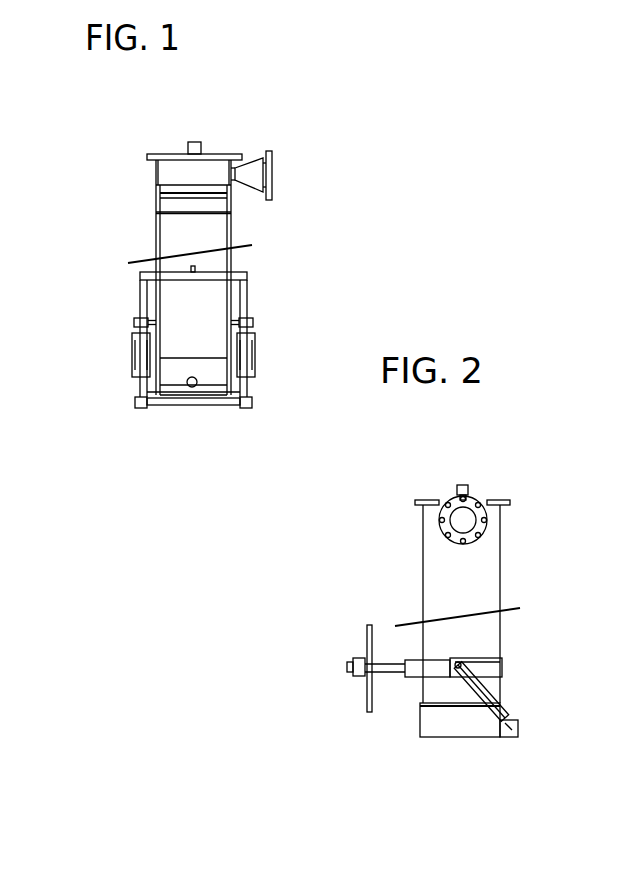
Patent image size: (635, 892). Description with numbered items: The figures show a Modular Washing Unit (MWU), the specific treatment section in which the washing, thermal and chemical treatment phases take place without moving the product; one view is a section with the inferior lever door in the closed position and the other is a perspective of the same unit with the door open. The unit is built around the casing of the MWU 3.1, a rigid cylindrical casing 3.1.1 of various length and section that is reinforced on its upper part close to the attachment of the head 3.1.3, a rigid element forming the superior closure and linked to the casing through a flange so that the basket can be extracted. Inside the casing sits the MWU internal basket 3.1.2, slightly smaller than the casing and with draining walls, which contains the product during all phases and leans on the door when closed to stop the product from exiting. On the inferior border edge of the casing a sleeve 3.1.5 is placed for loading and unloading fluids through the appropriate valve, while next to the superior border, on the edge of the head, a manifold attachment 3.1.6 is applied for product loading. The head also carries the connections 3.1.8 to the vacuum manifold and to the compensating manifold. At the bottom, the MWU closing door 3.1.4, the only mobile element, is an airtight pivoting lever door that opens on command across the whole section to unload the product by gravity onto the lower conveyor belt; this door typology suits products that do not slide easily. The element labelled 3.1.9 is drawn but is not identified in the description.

In FIG. 1, the casing of the MWU 3.1 is at (193, 337).
In FIG. 2, the casing of the MWU 3.1 is at (460, 646).
In FIG. 1, the rigid cylindrical casing 3.1.1 is at (231, 231).
In FIG. 2, the rigid cylindrical casing 3.1.1 is at (500, 575).
In FIG. 1, the MWU internal basket 3.1.2 is at (156, 227).
In FIG. 1, the head of MWU 3.1.3 is at (217, 153).
In FIG. 2, the head of MWU 3.1.3 is at (480, 498).
In FIG. 1, the MWU closing door 3.1.4 is at (197, 390).
In FIG. 2, the MWU closing door 3.1.4 is at (367, 690).
In FIG. 1, the sleeve 3.1.5 is at (185, 390).
In FIG. 2, the sleeve 3.1.5 is at (510, 737).
In FIG. 1, the manifold attachment 3.1.6 is at (272, 172).
In FIG. 2, the manifold attachment 3.1.6 is at (463, 518).
In FIG. 1, the connections to the vacuum manifold and compensating manifold 3.1.8 is at (197, 142).
In FIG. 2, the connections to the vacuum manifold and compensating manifold 3.1.8 is at (465, 485).
In FIG. 1, the sealing band 3.1.9 is at (165, 188).